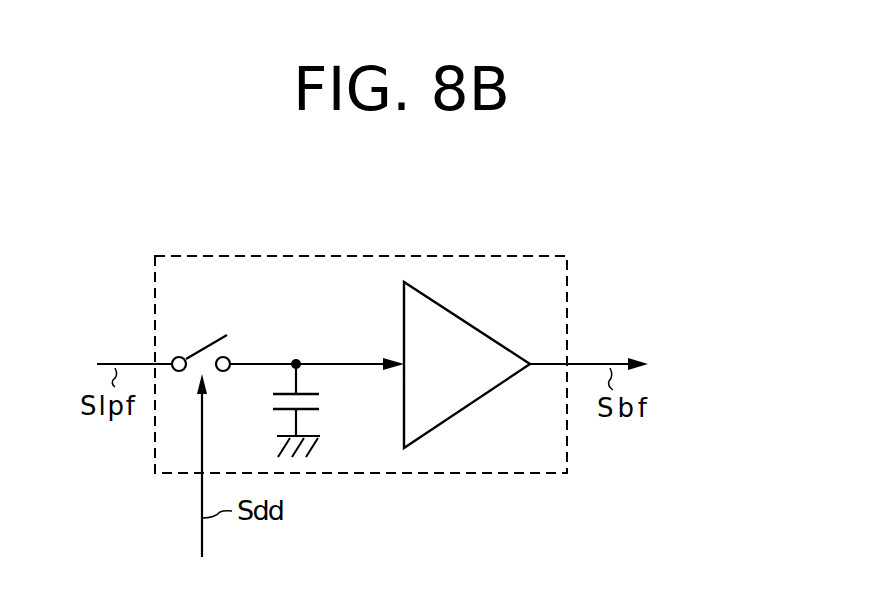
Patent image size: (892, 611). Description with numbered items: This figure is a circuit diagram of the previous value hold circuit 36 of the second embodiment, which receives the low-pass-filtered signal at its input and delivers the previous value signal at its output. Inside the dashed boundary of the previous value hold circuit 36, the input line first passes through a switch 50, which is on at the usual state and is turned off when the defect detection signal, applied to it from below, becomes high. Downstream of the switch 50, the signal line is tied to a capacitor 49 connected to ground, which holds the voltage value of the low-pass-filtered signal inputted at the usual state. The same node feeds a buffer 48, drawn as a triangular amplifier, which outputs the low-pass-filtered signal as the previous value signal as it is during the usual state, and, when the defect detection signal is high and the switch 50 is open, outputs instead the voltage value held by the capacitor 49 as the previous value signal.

The previous value hold circuit 36 is at (415, 255).
The buffer 48 is at (490, 340).
The capacitor 49 is at (323, 410).
The switch 50 is at (232, 337).